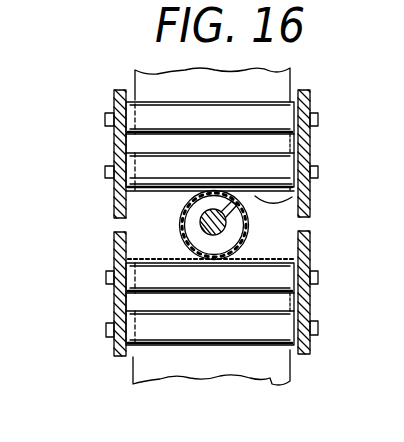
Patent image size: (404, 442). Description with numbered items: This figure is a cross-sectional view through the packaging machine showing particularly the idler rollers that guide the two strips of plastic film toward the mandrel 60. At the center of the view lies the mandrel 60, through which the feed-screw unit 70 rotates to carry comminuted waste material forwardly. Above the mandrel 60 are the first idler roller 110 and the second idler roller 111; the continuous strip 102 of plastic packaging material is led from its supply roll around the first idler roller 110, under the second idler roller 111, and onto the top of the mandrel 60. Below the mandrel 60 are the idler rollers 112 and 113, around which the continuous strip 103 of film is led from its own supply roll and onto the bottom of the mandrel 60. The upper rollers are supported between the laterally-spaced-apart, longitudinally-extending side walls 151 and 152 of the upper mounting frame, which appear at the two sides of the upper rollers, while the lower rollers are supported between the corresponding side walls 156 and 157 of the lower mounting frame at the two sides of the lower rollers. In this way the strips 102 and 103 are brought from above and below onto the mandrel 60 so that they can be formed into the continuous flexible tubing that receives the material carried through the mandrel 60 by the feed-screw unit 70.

The mandrel 60 is at (178, 222).
The feed-screw unit 70 is at (250, 223).
The strip 102 is at (272, 75).
The strip 103 is at (255, 255).
The first idler roller 110 is at (157, 107).
The second idler roller 111 is at (148, 165).
The idler roller 112 is at (157, 322).
The idler roller 113 is at (157, 272).
The side wall 151 is at (115, 192).
The side wall 152 is at (312, 100).
The side wall 156 is at (117, 346).
The side wall 157 is at (310, 294).